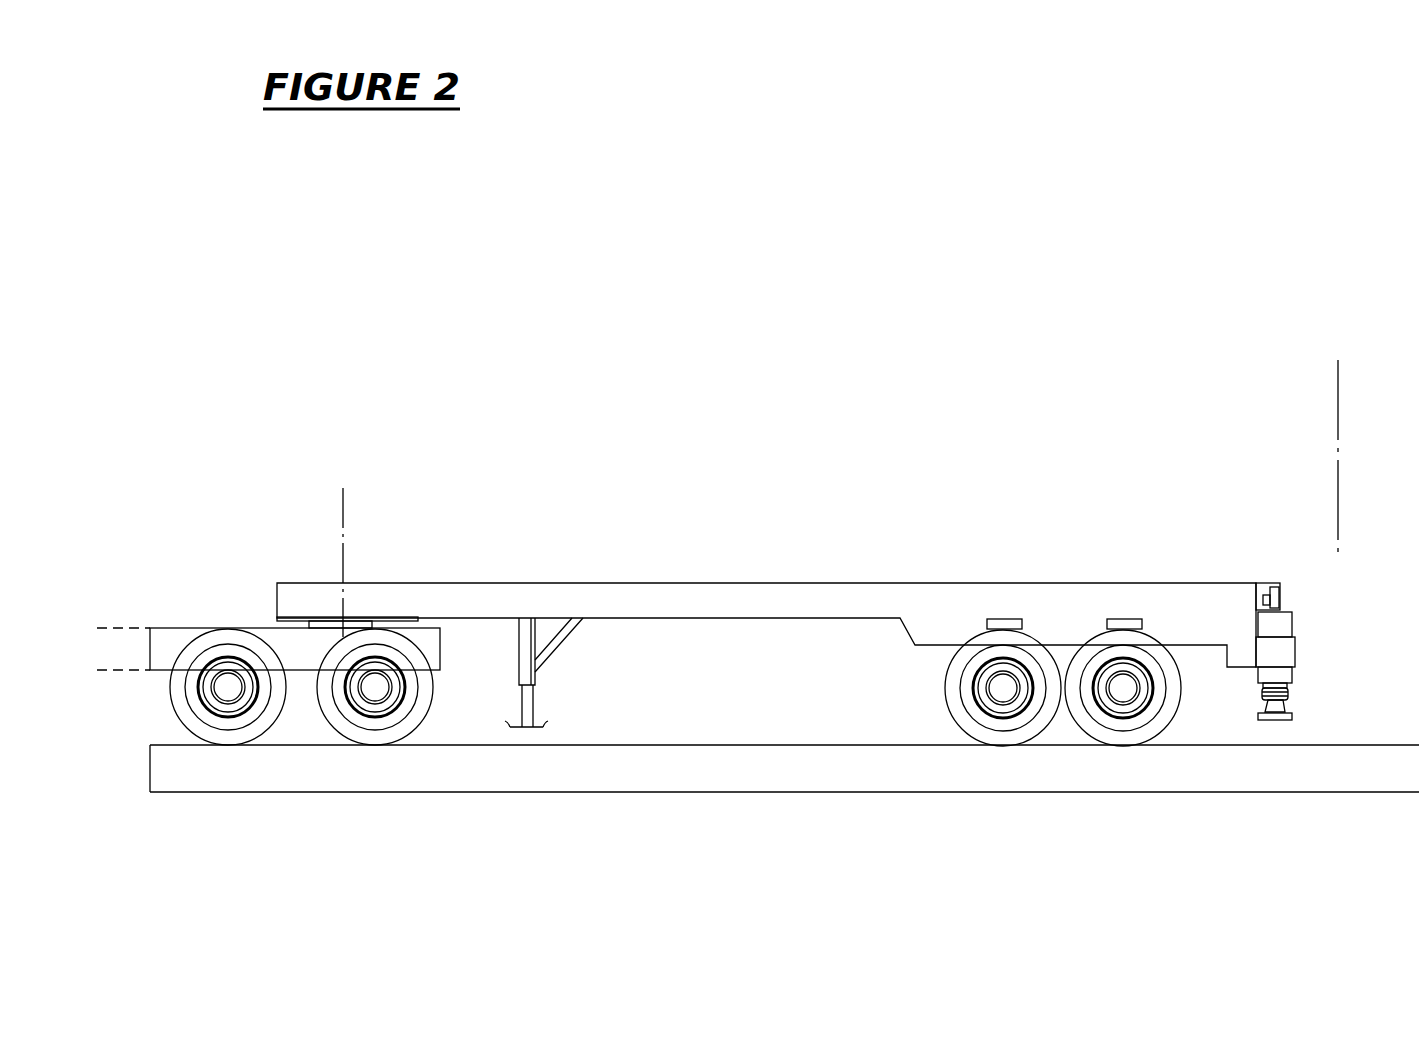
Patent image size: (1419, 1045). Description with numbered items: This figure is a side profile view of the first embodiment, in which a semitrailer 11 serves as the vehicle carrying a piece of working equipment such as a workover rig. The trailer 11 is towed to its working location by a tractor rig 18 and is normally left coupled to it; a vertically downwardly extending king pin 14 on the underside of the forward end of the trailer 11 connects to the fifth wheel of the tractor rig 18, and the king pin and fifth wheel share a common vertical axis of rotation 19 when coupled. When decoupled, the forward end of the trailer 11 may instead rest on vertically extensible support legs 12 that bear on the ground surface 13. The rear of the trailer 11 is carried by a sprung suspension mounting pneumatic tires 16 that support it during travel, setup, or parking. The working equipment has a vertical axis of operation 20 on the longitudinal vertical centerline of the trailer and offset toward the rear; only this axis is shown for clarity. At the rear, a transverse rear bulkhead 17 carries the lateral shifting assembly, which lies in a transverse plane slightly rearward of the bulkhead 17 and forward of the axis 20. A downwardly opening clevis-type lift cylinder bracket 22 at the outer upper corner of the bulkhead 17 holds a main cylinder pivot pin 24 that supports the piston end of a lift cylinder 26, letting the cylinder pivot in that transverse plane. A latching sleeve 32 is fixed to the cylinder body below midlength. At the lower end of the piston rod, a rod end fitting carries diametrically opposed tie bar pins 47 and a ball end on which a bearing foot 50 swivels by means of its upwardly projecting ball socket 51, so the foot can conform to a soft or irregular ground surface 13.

The semitrailer 11 is at (470, 582).
The vertically extensible support legs 12 is at (535, 705).
The ground surface 13 is at (467, 746).
The king pin 14 is at (340, 623).
The pneumatic tires 16 is at (947, 692).
The transverse rear bulkhead 17 is at (1258, 637).
The tractor rig 18 is at (248, 628).
The vertical axis of rotation 19 is at (343, 513).
The vertical axis of operation 20 is at (1338, 412).
The lift cylinder bracket 22 is at (1268, 583).
The main cylinder pivot pin 24 is at (1282, 602).
The lift cylinder 26 is at (1293, 672).
The latching sleeve 32 is at (1295, 653).
The tie bar pins 47 is at (1290, 695).
The bearing foot 50 is at (1293, 718).
The ball socket 51 is at (1283, 707).